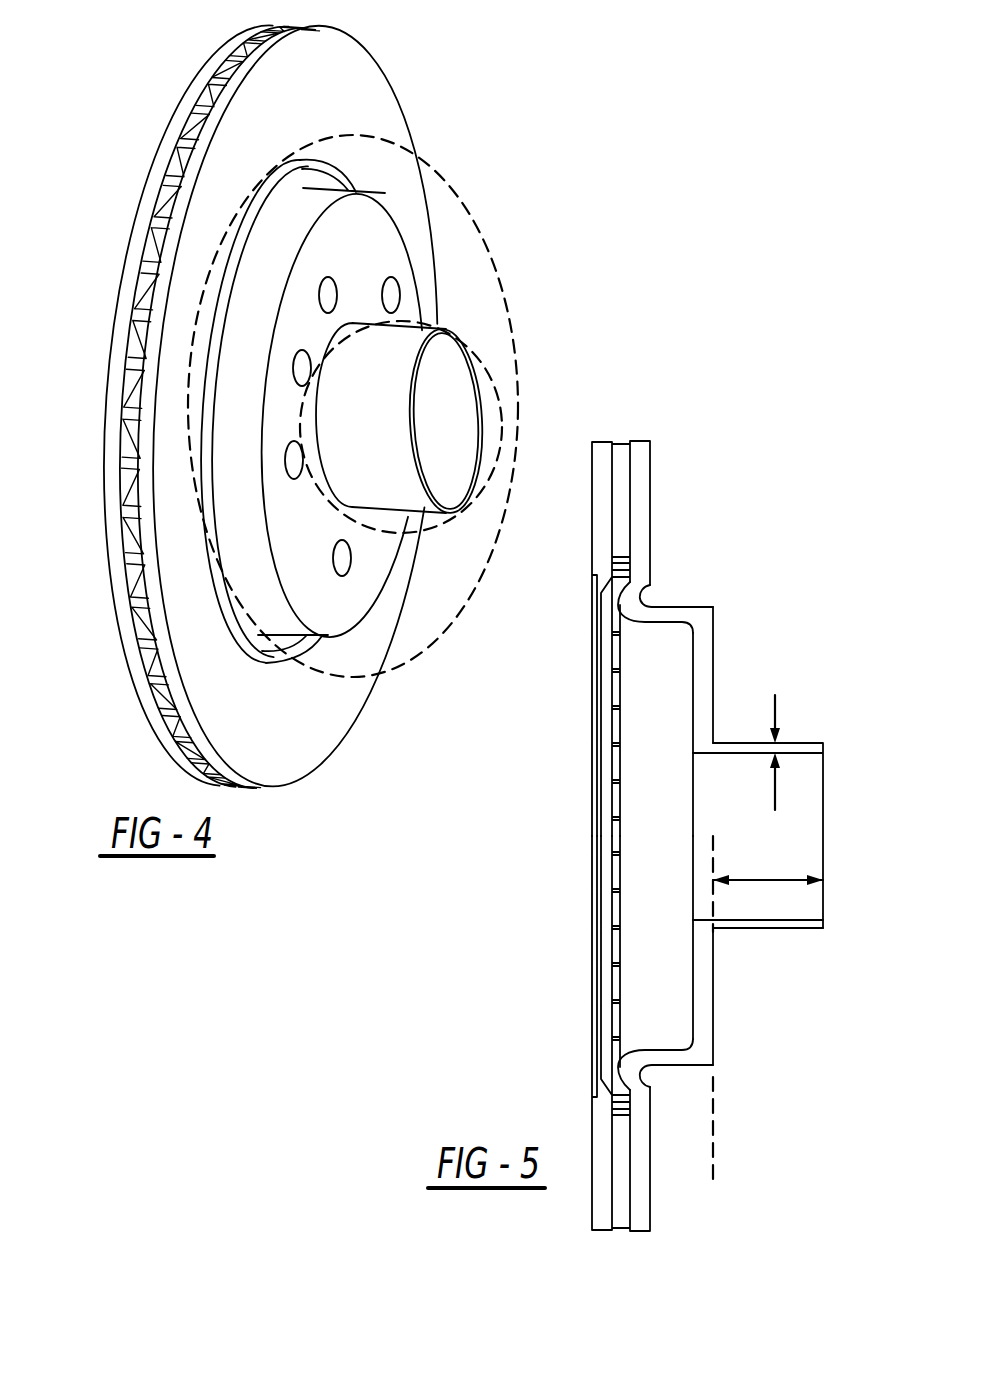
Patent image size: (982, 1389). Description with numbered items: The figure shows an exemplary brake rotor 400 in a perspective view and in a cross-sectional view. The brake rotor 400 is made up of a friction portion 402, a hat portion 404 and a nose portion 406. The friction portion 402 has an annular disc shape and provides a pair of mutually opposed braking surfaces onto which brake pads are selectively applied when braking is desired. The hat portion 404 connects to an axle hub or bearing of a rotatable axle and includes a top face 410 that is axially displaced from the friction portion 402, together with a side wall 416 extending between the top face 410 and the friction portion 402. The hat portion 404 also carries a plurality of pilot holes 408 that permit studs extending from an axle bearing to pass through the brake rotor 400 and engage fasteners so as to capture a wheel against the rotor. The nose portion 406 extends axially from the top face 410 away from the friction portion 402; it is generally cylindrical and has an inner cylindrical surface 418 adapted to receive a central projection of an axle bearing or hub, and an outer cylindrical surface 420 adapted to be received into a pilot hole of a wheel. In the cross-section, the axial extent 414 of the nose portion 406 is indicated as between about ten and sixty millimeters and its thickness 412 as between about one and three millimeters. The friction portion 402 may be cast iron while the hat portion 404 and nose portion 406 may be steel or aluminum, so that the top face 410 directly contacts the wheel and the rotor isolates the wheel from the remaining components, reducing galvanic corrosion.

In FIG. 4, the brake rotor 400 is at (110, 184).
In FIG. 5, the brake rotor 400 is at (566, 823).
In FIG. 4, the friction portion 402 is at (341, 65).
In FIG. 5, the friction portion 402 is at (672, 474).
In FIG. 4, the hat portion 404 is at (444, 522).
In FIG. 5, the hat portion 404 is at (704, 586).
In FIG. 5, the nose portion 406 is at (779, 930).
In FIG. 4, the pilot holes 408 is at (400, 297).
In FIG. 4, the top face 410 is at (373, 243).
In FIG. 5, the top face 410 is at (713, 658).
In FIG. 5, the thickness 412 is at (779, 735).
In FIG. 5, the axial extent 414 is at (777, 877).
In FIG. 4, the side wall 416 is at (283, 247).
In FIG. 5, the side wall 416 is at (672, 607).
In FIG. 4, the inner cylindrical surface 418 is at (447, 442).
In FIG. 5, the inner cylindrical surface 418 is at (800, 918).
In FIG. 4, the outer cylindrical surface 420 is at (390, 377).
In FIG. 5, the outer cylindrical surface 420 is at (810, 743).